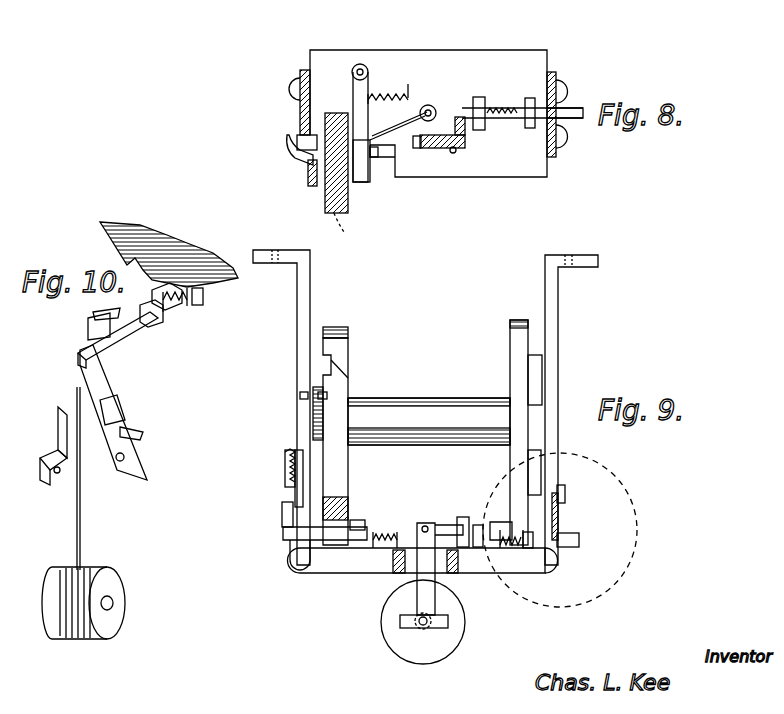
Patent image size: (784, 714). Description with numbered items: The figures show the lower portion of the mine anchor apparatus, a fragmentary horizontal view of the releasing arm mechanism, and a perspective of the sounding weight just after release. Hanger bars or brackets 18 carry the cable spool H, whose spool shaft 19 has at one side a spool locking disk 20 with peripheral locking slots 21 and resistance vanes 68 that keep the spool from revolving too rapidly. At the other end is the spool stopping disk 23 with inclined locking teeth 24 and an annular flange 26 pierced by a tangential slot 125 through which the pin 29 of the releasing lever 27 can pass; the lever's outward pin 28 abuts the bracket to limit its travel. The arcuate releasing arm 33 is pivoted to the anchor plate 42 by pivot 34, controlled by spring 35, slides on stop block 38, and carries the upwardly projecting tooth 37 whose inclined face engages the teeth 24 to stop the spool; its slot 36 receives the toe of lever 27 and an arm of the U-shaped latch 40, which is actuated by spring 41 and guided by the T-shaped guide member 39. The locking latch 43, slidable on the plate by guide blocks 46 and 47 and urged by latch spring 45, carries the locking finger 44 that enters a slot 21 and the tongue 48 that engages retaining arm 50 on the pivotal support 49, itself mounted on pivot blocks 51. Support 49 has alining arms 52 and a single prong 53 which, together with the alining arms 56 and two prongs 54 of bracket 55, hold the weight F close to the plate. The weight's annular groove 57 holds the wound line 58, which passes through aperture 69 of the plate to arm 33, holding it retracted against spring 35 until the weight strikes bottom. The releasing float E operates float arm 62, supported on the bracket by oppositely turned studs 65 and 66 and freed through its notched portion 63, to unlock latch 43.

In FIG. 8, the hanger bars or brackets 18 is at (299, 72).
In FIG. 9, the hanger bars or brackets 18 is at (312, 283).
In FIG. 9, the spool shaft 19 is at (445, 410).
In FIG. 10, the spool locking disk 20 is at (168, 250).
In FIG. 9, the spool locking disk 20 is at (512, 362).
In FIG. 10, the locking slots 21 is at (145, 263).
In FIG. 9, the locking slots 21 is at (510, 425).
In FIG. 8, the spool stopping disk 23 is at (328, 208).
In FIG. 9, the spool stopping disk 23 is at (350, 457).
In FIG. 8, the locking teeth 24 is at (344, 229).
In FIG. 9, the locking teeth 24 is at (352, 343).
In FIG. 9, the annular flange 26 is at (335, 325).
In FIG. 8, the releasing lever 27 is at (310, 186).
In FIG. 9, the releasing lever 27 is at (305, 438).
In FIG. 9, the projection or pin 28 is at (300, 392).
In FIG. 9, the projection or pin 29 is at (328, 396).
In FIG. 8, the arcuate releasing arm 33 is at (360, 175).
In FIG. 9, the arcuate releasing arm 33 is at (285, 535).
In FIG. 8, the pivot 34 is at (362, 64).
In FIG. 8, the spring 35 is at (396, 86).
In FIG. 9, the spring 35 is at (388, 530).
In FIG. 8, the slot 36 is at (292, 150).
In FIG. 9, the slot 36 is at (292, 552).
In FIG. 8, the tooth 37 is at (358, 112).
In FIG. 9, the tooth 37 is at (362, 512).
In FIG. 8, the stop block 38 is at (378, 152).
In FIG. 9, the guide member 39 is at (284, 516).
In FIG. 9, the stop or latch 40 is at (297, 490).
In FIG. 9, the spring 41 is at (287, 465).
In FIG. 8, the anchor plate 42 is at (535, 54).
In FIG. 9, the anchor plate 42 is at (312, 575).
In FIG. 8, the locking latch 43 is at (490, 118).
In FIG. 10, the locking latch 43 is at (130, 340).
In FIG. 9, the locking latch 43 is at (476, 525).
In FIG. 8, the locking finger 44 is at (548, 165).
In FIG. 10, the locking finger 44 is at (170, 283).
In FIG. 9, the locking finger 44 is at (498, 522).
In FIG. 8, the latch spring 45 is at (510, 120).
In FIG. 10, the latch spring 45 is at (185, 312).
In FIG. 9, the latch spring 45 is at (512, 548).
In FIG. 8, the guide block 46 is at (466, 140).
In FIG. 10, the guide block 46 is at (160, 325).
In FIG. 9, the guide block 46 is at (525, 548).
In FIG. 8, the guide block 47 is at (528, 130).
In FIG. 10, the guide block 47 is at (205, 296).
In FIG. 9, the guide block 47 is at (533, 550).
In FIG. 8, the tongue 48 is at (480, 96).
In FIG. 10, the tongue 48 is at (90, 327).
In FIG. 9, the tongue 48 is at (462, 517).
In FIG. 8, the pivotal support 49 is at (440, 160).
In FIG. 10, the pivotal support 49 is at (120, 414).
In FIG. 9, the pivotal support 49 is at (420, 603).
In FIG. 8, the retaining arm 50 is at (452, 153).
In FIG. 10, the retaining arm 50 is at (111, 305).
In FIG. 9, the retaining arm 50 is at (440, 528).
In FIG. 8, the pivot blocks 51 is at (421, 144).
In FIG. 9, the pivot blocks 51 is at (398, 574).
In FIG. 10, the alining arms 52 is at (145, 432).
In FIG. 9, the alining arms 52 is at (408, 625).
In FIG. 10, the prong 53 is at (125, 459).
In FIG. 9, the prong 53 is at (426, 630).
In FIG. 10, the prongs 54 is at (58, 474).
In FIG. 9, the prongs 54 is at (565, 548).
In FIG. 10, the bracket 55 is at (58, 423).
In FIG. 10, the alining arms 56 is at (45, 462).
In FIG. 10, the annular groove 57 is at (75, 640).
In FIG. 8, the line 58 is at (400, 120).
In FIG. 10, the line 58 is at (82, 522).
In FIG. 9, the line 58 is at (395, 560).
In FIG. 9, the float arm 62 is at (560, 520).
In FIG. 9, the notched portion 63 is at (565, 500).
In FIG. 9, the stud or finger 65 is at (566, 492).
In FIG. 8, the stud or finger 66 is at (580, 112).
In FIG. 9, the stud or finger 66 is at (580, 542).
In FIG. 9, the resistance vanes 68 is at (535, 380).
In FIG. 8, the aperture 69 is at (433, 108).
In FIG. 9, the tangential slot 125 is at (312, 370).
In FIG. 9, the releasing float E is at (637, 503).
In FIG. 10, the weight F is at (115, 583).
In FIG. 9, the weight F is at (395, 627).
In FIG. 9, the cable spool H is at (508, 405).